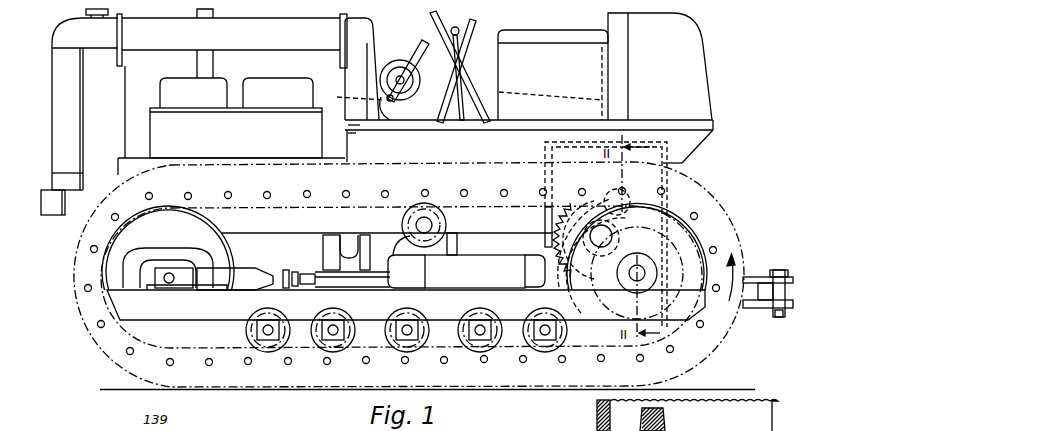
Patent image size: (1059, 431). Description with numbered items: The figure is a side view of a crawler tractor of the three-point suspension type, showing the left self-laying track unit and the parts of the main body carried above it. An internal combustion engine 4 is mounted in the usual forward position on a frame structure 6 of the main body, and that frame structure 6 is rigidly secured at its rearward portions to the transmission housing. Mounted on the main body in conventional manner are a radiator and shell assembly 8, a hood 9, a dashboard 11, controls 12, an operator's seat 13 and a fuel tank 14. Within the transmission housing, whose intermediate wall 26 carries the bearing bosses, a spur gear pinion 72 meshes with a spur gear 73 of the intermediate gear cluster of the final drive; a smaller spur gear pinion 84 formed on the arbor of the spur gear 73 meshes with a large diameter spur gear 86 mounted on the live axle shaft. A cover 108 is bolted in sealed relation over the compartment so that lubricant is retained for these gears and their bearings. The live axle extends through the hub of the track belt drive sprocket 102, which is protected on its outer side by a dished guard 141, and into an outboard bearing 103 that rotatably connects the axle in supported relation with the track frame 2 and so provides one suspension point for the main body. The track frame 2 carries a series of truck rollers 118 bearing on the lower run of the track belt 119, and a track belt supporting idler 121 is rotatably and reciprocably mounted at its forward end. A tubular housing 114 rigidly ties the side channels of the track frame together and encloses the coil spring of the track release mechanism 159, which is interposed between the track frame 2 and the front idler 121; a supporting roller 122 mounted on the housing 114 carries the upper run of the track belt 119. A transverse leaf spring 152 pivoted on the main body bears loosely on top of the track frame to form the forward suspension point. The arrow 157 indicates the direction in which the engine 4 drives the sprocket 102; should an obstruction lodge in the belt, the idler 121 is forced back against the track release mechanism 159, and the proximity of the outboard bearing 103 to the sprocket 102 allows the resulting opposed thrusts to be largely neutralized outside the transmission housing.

The track frame 2 is at (183, 317).
The internal combustion engine 4 is at (241, 137).
The frame structure 6 is at (276, 232).
The radiator and shell assembly 8 is at (57, 83).
The hood 9 is at (267, 48).
The dashboard 11 is at (367, 46).
The controls 12 is at (417, 62).
The operator's seat 13 is at (563, 92).
The fuel tank 14 is at (699, 56).
The intermediate wall 26 is at (597, 416).
The spur gear pinion 72 is at (612, 195).
The spur gear 73 is at (622, 219).
The spur gear pinion 84 is at (594, 257).
The large diameter spur gear 86 is at (599, 293).
The track belt drive sprocket 102 is at (580, 287).
The outboard bearing 103 is at (628, 284).
The cover 108 is at (683, 241).
The tubular housing 114 is at (468, 262).
The truck rollers 118 is at (327, 345).
The track belt 119 is at (73, 323).
The track belt supporting idler 121 is at (220, 255).
The supporting roller 122 is at (447, 221).
The dished guard 141 is at (692, 262).
The transverse leaf spring 152 is at (350, 272).
The arrow 157 is at (729, 306).
The track release mechanism 159 is at (277, 268).